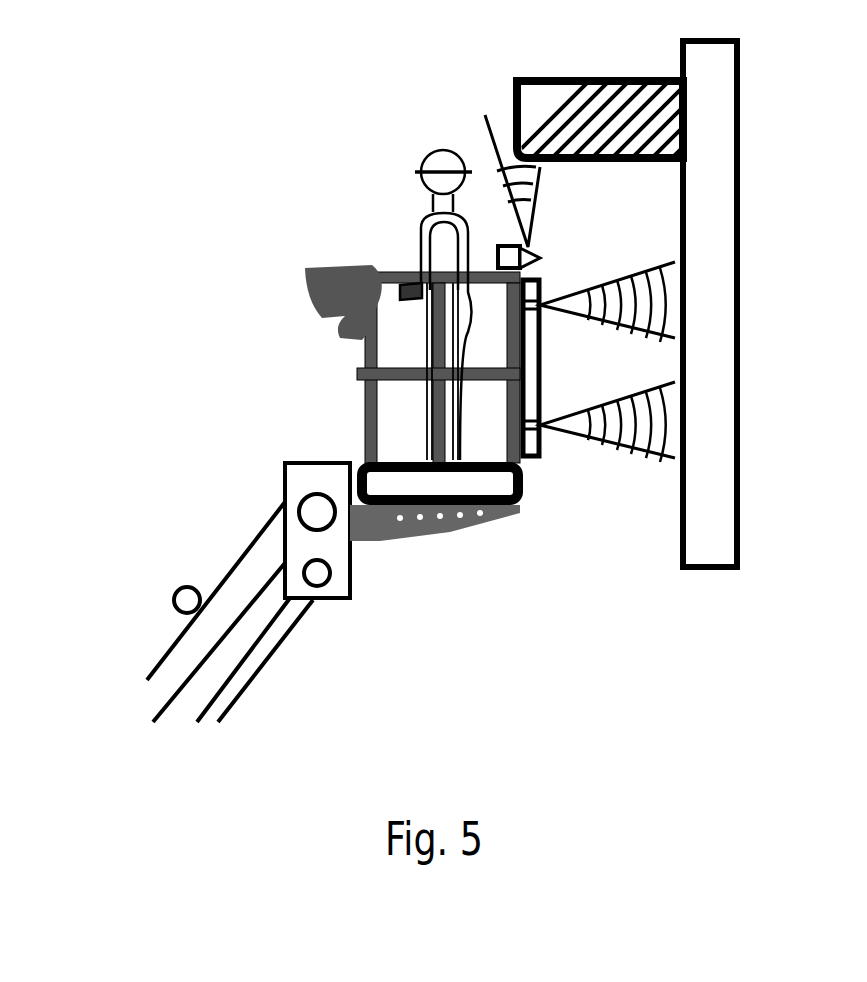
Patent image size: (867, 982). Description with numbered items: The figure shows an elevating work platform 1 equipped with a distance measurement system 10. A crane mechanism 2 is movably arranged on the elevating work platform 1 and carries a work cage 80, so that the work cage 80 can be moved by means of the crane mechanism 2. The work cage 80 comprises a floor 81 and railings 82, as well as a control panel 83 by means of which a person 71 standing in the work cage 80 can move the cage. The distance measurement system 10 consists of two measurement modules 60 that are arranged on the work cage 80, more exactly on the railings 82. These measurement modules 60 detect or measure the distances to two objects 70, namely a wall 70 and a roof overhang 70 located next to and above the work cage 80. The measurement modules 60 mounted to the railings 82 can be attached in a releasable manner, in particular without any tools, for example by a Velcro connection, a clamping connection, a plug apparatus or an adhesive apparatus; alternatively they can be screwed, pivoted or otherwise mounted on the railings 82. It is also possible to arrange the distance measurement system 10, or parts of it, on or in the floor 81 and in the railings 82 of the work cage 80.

The elevating work platform 1 is at (156, 108).
The distance measurement system 10 is at (451, 347).
The crane mechanism 2 is at (240, 573).
The measurement module 60 is at (495, 247).
The object 70 is at (565, 108).
The person 71 is at (443, 235).
The work cage 80 is at (338, 382).
The floor 81 is at (473, 483).
The railing 82 is at (365, 400).
The control panel 83 is at (338, 295).